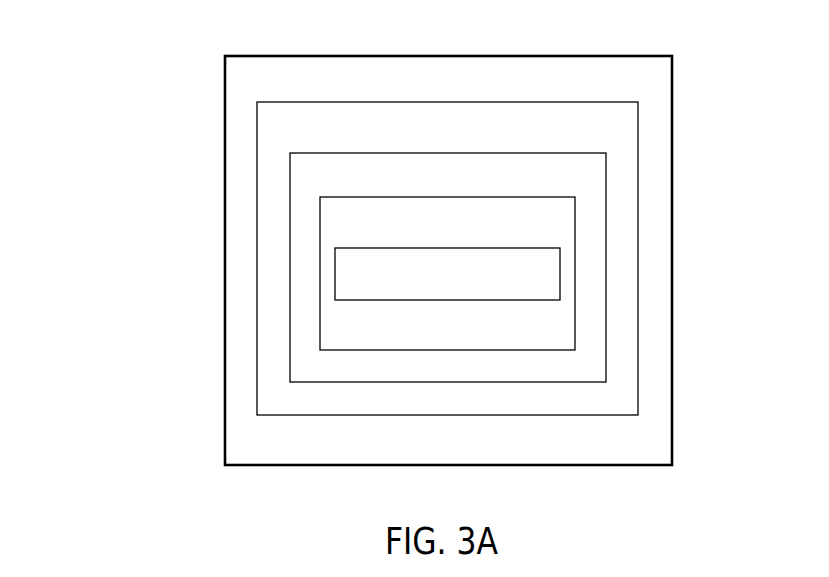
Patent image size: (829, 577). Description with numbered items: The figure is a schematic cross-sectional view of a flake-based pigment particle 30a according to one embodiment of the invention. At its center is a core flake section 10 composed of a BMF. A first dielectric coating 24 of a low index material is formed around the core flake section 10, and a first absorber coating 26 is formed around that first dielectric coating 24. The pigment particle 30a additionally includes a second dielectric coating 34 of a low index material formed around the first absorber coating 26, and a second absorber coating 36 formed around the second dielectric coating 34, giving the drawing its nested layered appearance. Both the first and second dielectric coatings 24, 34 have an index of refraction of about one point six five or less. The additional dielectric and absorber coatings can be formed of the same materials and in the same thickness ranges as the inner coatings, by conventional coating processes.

The pigment particle 30a is at (393, 233).
The second absorber coating 36 is at (637, 60).
The second dielectric coating 34 is at (617, 135).
The first absorber coating 26 is at (597, 197).
The first dielectric coating 24 is at (562, 233).
The core flake section 10 is at (537, 282).